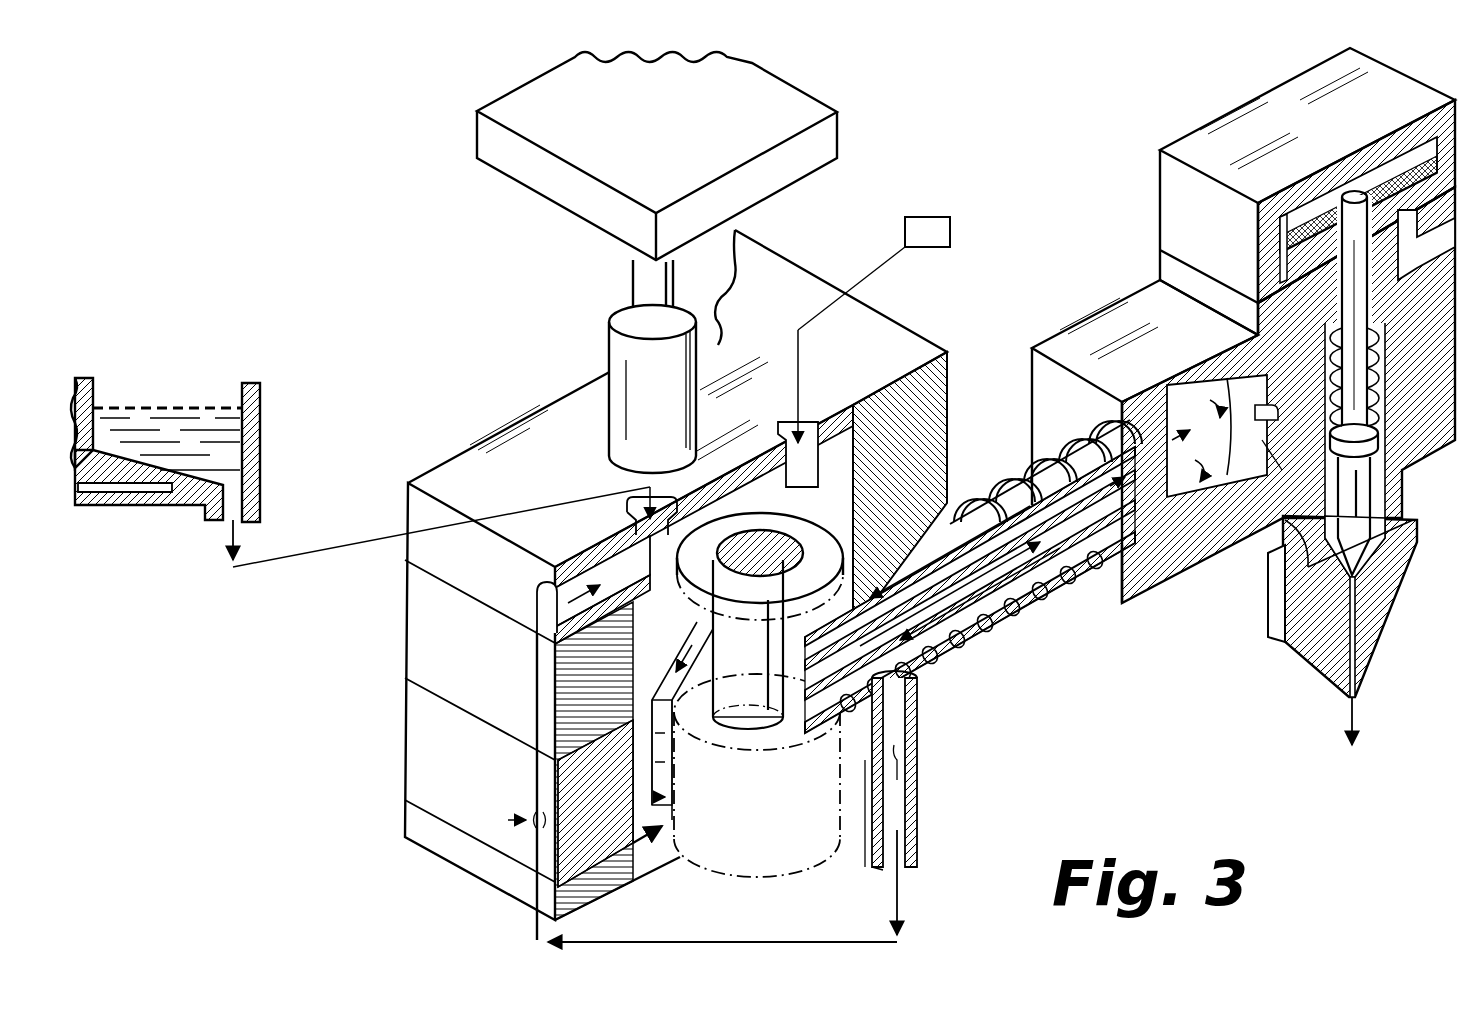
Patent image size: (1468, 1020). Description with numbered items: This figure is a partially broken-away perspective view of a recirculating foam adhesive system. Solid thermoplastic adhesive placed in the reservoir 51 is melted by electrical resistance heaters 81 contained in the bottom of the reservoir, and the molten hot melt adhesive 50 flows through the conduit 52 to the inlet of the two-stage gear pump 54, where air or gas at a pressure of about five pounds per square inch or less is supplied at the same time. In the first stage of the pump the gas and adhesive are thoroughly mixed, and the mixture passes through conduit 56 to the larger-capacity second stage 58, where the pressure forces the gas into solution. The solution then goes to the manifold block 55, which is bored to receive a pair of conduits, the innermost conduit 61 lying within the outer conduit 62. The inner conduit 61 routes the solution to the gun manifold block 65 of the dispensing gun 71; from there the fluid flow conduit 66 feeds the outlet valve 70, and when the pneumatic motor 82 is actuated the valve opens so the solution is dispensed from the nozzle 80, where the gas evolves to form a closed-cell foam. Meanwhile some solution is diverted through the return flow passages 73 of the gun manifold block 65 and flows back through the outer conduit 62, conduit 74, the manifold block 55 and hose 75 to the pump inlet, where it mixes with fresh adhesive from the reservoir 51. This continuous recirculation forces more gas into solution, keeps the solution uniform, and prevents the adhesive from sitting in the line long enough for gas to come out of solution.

The molten hot melt adhesive 50 is at (145, 405).
The reservoir 51 is at (187, 505).
The conduit 52 is at (340, 545).
The two-stage gear pump 54 is at (720, 345).
The manifold block 55 is at (890, 346).
The conduit 56 is at (713, 647).
The second stage 58 is at (700, 869).
The innermost conduit 61 is at (1023, 563).
The outer conduit 62 is at (983, 637).
The gun manifold block 65 is at (1098, 334).
The fluid flow conduit 66 is at (1277, 420).
The outlet valve 70 is at (1358, 566).
The dispensing gun 71 is at (1284, 106).
The return flow passages 73 is at (1160, 540).
The conduit 74 is at (900, 728).
The hose 75 is at (536, 925).
The nozzle 80 is at (1355, 694).
The electrical resistance heaters 81 is at (130, 491).
The pneumatic motor 82 is at (1388, 167).